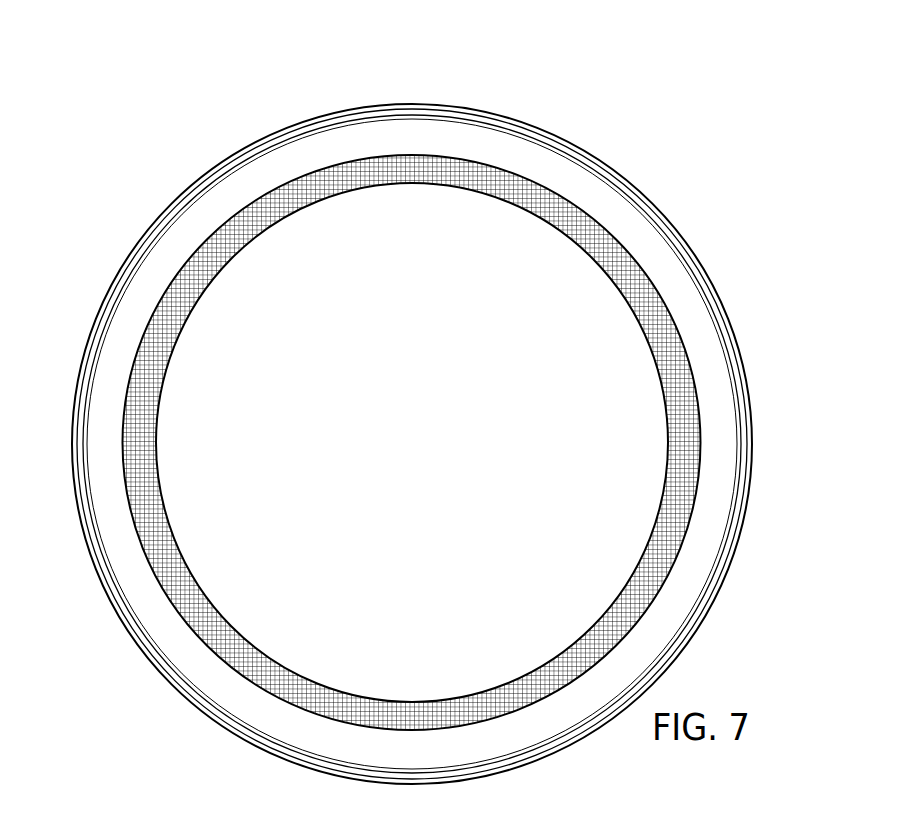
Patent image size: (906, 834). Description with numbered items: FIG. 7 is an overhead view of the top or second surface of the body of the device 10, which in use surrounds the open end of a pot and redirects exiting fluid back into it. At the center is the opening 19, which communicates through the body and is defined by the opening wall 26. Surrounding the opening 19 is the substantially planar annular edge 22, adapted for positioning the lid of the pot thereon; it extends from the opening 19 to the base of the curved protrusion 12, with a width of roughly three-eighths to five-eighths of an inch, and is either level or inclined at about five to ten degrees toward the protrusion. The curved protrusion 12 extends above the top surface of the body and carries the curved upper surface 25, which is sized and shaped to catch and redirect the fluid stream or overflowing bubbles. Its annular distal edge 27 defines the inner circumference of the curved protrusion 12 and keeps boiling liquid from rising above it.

The device 10 is at (412, 410).
The curved protrusion 12 is at (233, 175).
The opening 19 is at (407, 464).
The annular edge 22 is at (275, 202).
The upper surface 25 is at (404, 152).
The opening wall 26 is at (155, 480).
The distal edge 27 is at (310, 121).